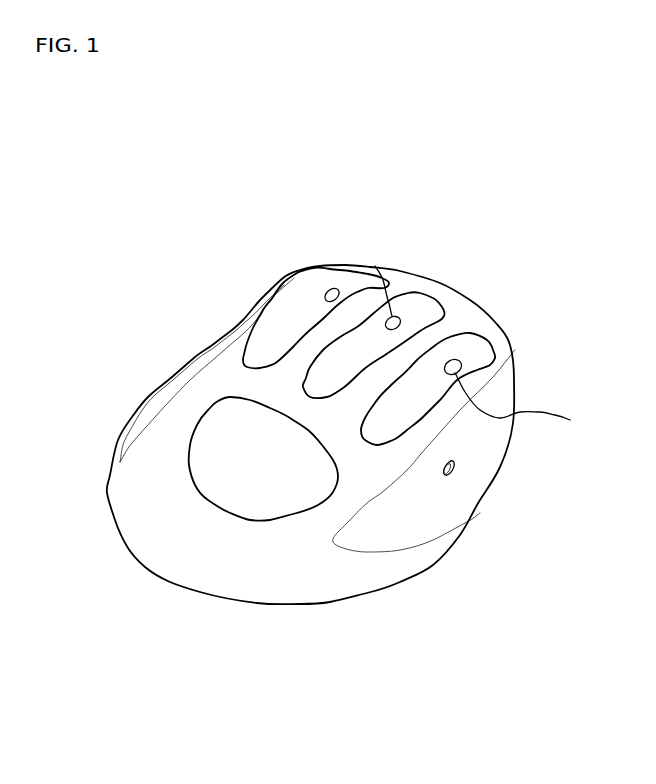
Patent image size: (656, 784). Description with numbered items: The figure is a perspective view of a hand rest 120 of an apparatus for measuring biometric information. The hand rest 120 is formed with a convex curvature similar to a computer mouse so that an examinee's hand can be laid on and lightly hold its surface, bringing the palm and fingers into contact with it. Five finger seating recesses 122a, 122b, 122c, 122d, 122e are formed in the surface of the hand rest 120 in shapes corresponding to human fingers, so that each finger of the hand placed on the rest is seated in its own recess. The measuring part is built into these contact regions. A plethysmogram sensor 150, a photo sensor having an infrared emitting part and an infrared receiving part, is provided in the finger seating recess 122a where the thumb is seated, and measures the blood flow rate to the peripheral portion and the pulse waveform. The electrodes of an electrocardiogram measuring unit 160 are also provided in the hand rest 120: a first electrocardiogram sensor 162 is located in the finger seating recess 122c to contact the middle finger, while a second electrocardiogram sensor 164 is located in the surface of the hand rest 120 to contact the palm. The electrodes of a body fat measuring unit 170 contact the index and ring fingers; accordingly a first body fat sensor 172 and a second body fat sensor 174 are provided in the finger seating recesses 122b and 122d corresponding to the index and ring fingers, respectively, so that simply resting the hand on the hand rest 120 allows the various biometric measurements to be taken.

The hand rest 120 is at (522, 204).
The finger seating recess 122a is at (503, 397).
The finger seating recess 122b is at (483, 352).
The finger seating recess 122c is at (420, 303).
The finger seating recess 122d is at (375, 266).
The finger seating recess 122e is at (172, 393).
The plethysmogram sensor 150 is at (456, 468).
The electrocardiogram measuring unit 160 is at (277, 213).
The first electrocardiogram sensor 162 is at (372, 281).
The second electrocardiogram sensor 164 is at (223, 417).
The body fat measuring unit 170 is at (423, 685).
The first body fat sensor 172 is at (327, 300).
The second body fat sensor 174 is at (452, 372).